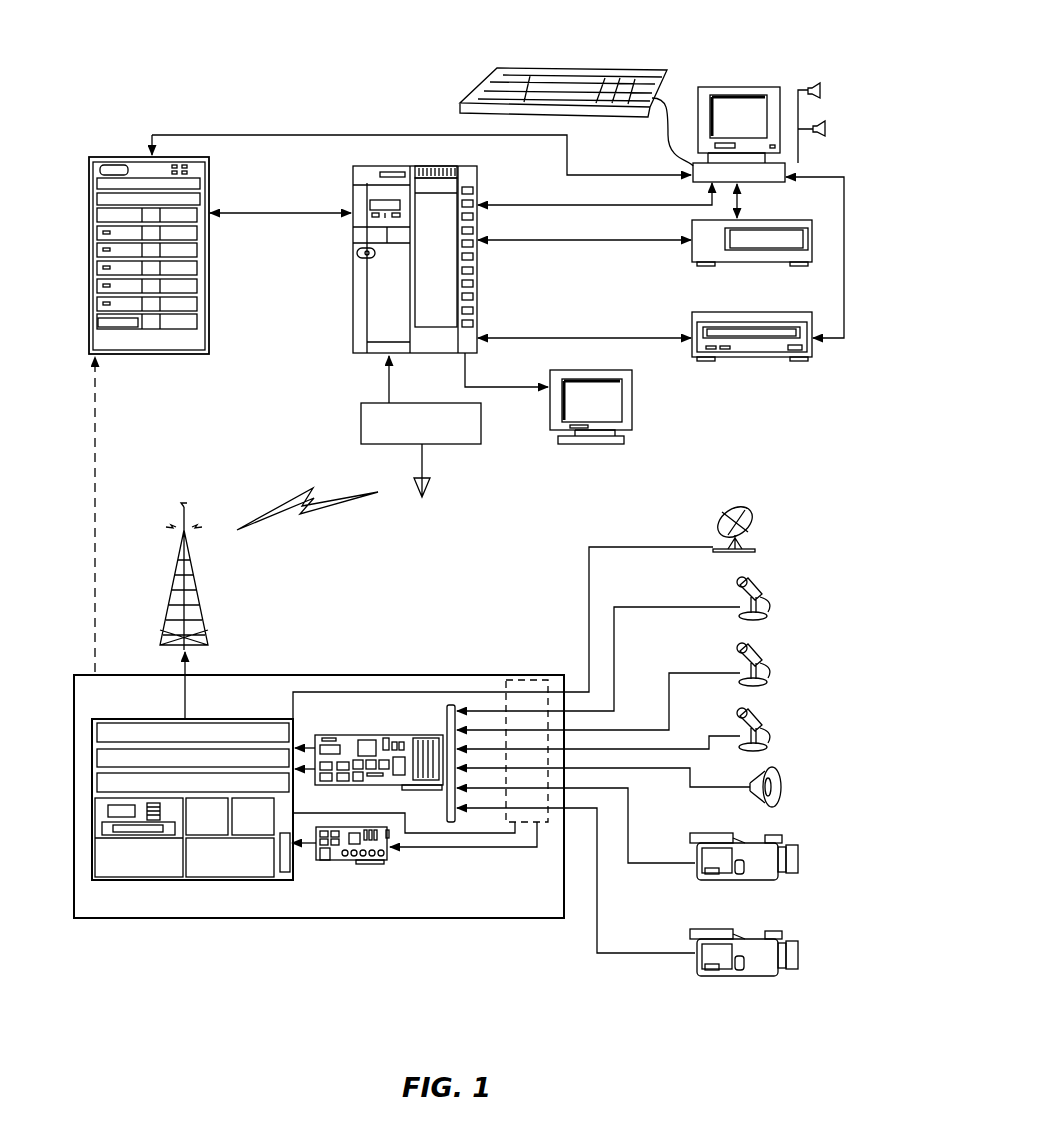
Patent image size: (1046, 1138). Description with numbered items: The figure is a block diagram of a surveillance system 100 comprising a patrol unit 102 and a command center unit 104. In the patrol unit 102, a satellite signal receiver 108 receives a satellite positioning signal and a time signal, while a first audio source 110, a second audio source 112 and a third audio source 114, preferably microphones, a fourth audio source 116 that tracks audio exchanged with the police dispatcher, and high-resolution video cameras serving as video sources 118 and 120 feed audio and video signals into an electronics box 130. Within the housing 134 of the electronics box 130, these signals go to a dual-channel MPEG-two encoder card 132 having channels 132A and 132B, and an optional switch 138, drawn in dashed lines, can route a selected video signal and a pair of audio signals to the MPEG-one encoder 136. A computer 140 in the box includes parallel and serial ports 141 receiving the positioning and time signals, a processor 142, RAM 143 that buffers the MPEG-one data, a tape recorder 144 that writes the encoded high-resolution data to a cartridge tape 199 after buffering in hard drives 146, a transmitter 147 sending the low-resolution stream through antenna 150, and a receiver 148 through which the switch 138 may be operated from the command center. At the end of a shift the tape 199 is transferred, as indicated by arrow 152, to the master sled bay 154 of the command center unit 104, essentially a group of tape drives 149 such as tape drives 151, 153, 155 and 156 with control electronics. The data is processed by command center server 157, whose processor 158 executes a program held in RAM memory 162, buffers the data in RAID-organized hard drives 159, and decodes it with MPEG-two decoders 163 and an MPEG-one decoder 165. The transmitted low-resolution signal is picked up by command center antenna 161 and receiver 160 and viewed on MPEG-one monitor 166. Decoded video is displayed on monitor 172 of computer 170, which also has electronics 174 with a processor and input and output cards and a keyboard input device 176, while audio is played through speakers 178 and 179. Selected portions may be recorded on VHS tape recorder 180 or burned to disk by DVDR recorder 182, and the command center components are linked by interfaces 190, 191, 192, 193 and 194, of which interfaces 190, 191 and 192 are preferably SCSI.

The surveillance system 100 is at (149, 47).
The patrol unit 102 is at (746, 472).
The command center unit 104 is at (771, 389).
The satellite signal receiver 108 is at (755, 540).
The first audio source 110 is at (765, 598).
The second audio source 112 is at (765, 664).
The third audio source 114 is at (765, 728).
The fourth audio source 116 is at (780, 777).
The first video source 118 is at (793, 847).
The second video source 120 is at (793, 943).
The electronics box 130 is at (278, 924).
The MPEG-2 encoder card 132 is at (380, 735).
The first channel 132A is at (301, 742).
The second channel 132B is at (307, 776).
The housing 134 is at (424, 675).
The MPEG-1 encoder 136 is at (342, 862).
The switch 138 is at (518, 680).
The computer 140 is at (223, 880).
The parallel and serial ports 141 is at (286, 875).
The processor 142 is at (224, 833).
The RAM 143 is at (270, 833).
The tape drive 144 is at (99, 817).
The hard drives 146 is at (148, 716).
The transmitter 147 is at (132, 870).
The receiver 148 is at (246, 869).
The tape drives 149 is at (155, 358).
The antenna 150 is at (199, 600).
The tape drive 151 is at (98, 320).
The arrow 152 is at (96, 472).
The tape drive 153 is at (102, 288).
The master sled bay 154 is at (209, 240).
The tape drive 155 is at (102, 256).
The tape drive 156 is at (102, 218).
The command center server 157 is at (352, 205).
The processor 158 is at (370, 230).
The hard drives 159 is at (442, 202).
The receiver 160 is at (473, 445).
The antenna 161 is at (430, 490).
The RAM memory 162 is at (398, 238).
The MPEG-2 decoders 163 is at (488, 265).
The MPEG-1 decoder 165 is at (488, 292).
The MPEG-1 monitor 166 is at (632, 415).
The computer 170 is at (774, 44).
The monitor 172 is at (724, 100).
The electronics 174 is at (786, 170).
The input device 176 is at (645, 65).
The speaker 178 is at (820, 84).
The speaker 179 is at (826, 131).
The tape recorder 180 is at (737, 263).
The DVDR recorder 182 is at (728, 358).
The interface 190 is at (262, 212).
The interface 191 is at (618, 241).
The interface 192 is at (597, 338).
The interface 193 is at (740, 203).
The interface 194 is at (844, 290).
The tape 199 is at (112, 325).